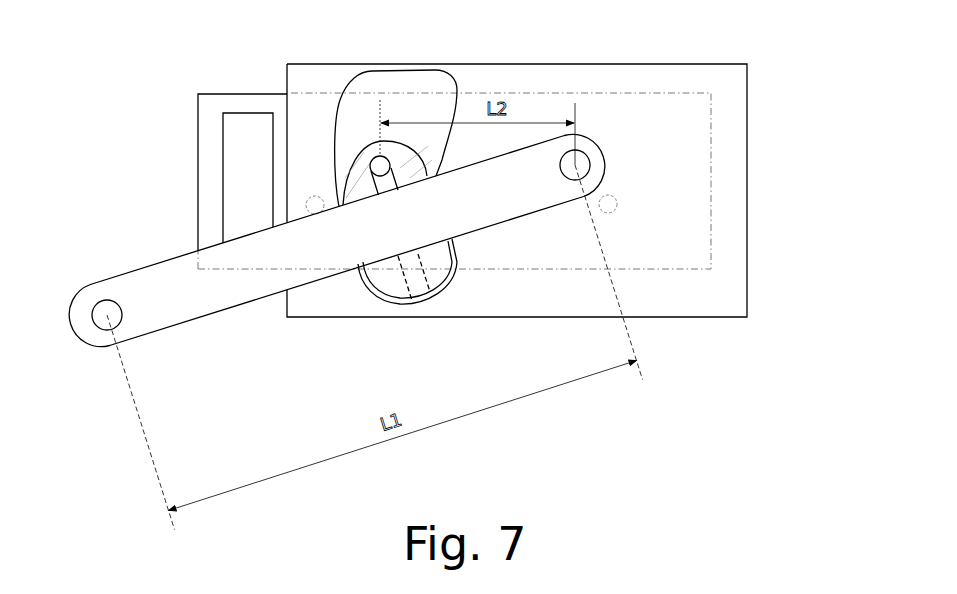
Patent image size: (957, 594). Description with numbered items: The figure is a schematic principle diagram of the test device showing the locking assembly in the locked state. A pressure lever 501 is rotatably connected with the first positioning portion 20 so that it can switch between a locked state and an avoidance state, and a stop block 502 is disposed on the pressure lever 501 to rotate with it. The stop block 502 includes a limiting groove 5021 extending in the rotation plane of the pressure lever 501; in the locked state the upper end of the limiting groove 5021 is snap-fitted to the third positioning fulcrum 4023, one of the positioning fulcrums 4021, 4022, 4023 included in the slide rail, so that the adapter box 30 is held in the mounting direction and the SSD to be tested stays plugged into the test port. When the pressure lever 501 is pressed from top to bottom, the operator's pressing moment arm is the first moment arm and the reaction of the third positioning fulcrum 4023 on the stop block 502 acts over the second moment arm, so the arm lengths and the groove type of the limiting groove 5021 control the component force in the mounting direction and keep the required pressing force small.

The first positioning portion 20 is at (749, 271).
The adapter box 30 is at (196, 121).
The pressure lever 501 is at (159, 261).
The stop block 502 is at (372, 136).
The first positioning fulcrum 4021 is at (621, 195).
The second positioning fulcrum 4022 is at (313, 191).
The third positioning fulcrum 4023 is at (373, 154).
The limiting groove 5021 is at (415, 279).